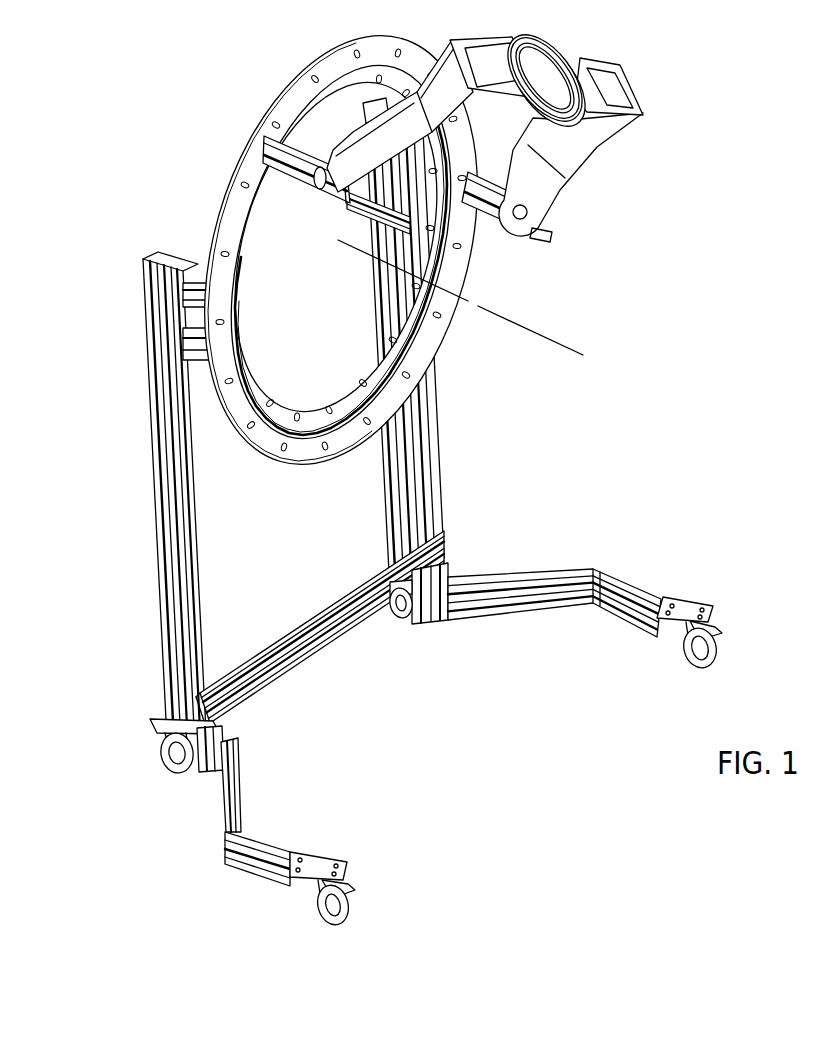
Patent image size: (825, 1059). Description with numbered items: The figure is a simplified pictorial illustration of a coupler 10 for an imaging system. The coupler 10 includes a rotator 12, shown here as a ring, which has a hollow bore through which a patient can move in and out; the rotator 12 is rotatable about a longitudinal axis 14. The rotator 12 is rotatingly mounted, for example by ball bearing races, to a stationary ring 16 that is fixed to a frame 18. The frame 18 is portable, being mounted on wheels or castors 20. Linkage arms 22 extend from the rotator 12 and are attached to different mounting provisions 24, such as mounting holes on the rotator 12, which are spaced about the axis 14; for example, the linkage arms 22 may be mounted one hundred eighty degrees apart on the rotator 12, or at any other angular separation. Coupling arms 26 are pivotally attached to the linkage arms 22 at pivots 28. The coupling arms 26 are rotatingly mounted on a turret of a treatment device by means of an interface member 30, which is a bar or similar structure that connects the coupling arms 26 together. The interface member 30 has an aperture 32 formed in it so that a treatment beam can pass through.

The coupler 10 is at (411, 475).
The rotator 12 is at (342, 250).
The longitudinal axis 14 is at (540, 336).
The stationary ring 16 is at (295, 412).
The frame 18 is at (168, 526).
The castors 20 is at (350, 903).
The linkage arms 22 is at (292, 168).
The mounting provisions 24 is at (238, 174).
The coupling arms 26 is at (358, 140).
The pivots 28 is at (523, 228).
The interface member 30 is at (528, 97).
The aperture 32 is at (547, 78).